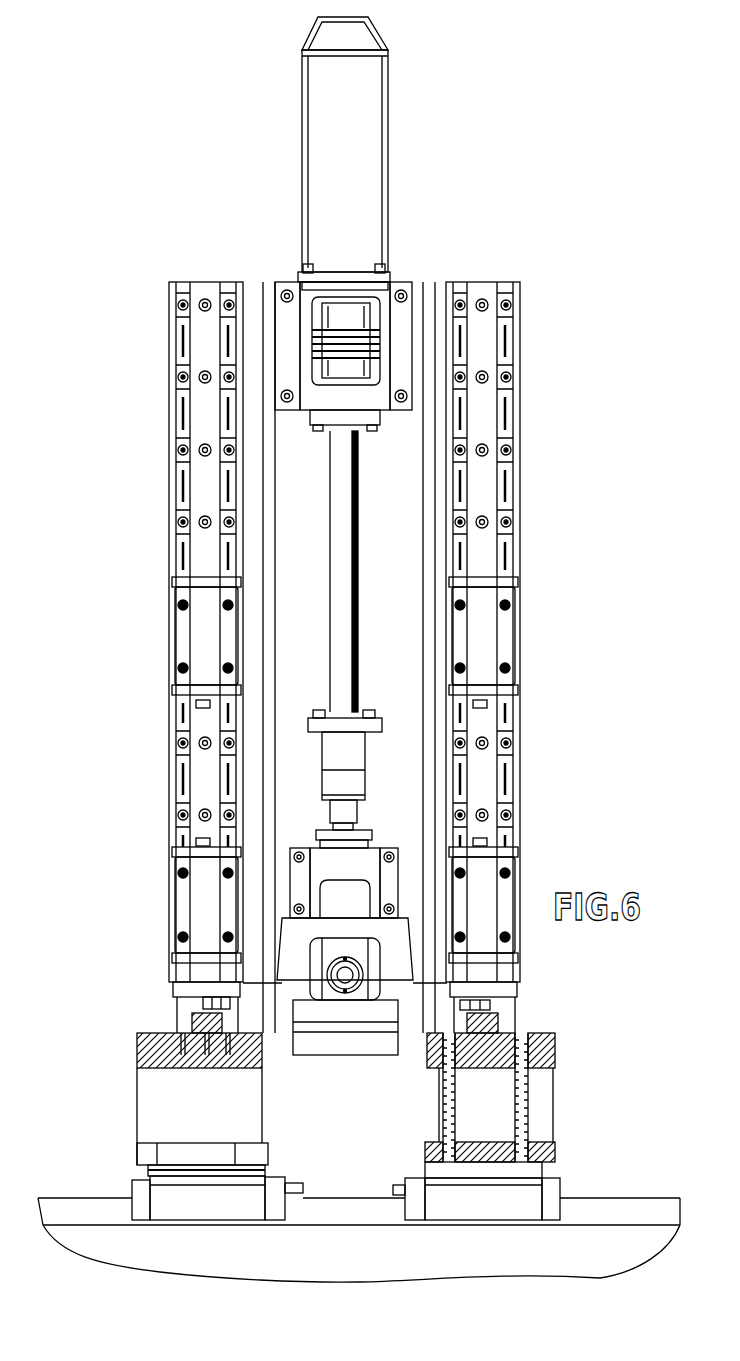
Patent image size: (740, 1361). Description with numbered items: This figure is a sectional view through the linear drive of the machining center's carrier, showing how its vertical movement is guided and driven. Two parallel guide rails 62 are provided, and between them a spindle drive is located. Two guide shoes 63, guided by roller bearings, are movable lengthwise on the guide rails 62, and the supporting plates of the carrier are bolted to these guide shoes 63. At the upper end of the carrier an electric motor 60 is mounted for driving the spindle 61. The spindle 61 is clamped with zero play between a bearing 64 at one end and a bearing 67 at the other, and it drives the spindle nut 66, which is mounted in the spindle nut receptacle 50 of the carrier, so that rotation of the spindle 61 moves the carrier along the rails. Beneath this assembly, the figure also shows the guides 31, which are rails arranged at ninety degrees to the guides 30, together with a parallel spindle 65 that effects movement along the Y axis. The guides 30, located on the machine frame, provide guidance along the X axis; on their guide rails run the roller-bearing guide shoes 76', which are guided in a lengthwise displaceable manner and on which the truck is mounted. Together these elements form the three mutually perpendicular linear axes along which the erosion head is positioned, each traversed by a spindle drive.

The guides 30 is at (100, 1215).
The guides 31 is at (190, 1042).
The spindle nut receptacle 50 is at (378, 722).
The electric motor 60 is at (365, 192).
The spindle 61 is at (350, 515).
The guide rails 62 is at (200, 410).
The guide shoes 63 is at (188, 638).
The bearing 64 is at (365, 862).
The spindle 65 is at (335, 977).
The spindle nut 66 is at (335, 750).
The bearing 67 is at (403, 338).
The guide shoes 76' is at (346, 1225).